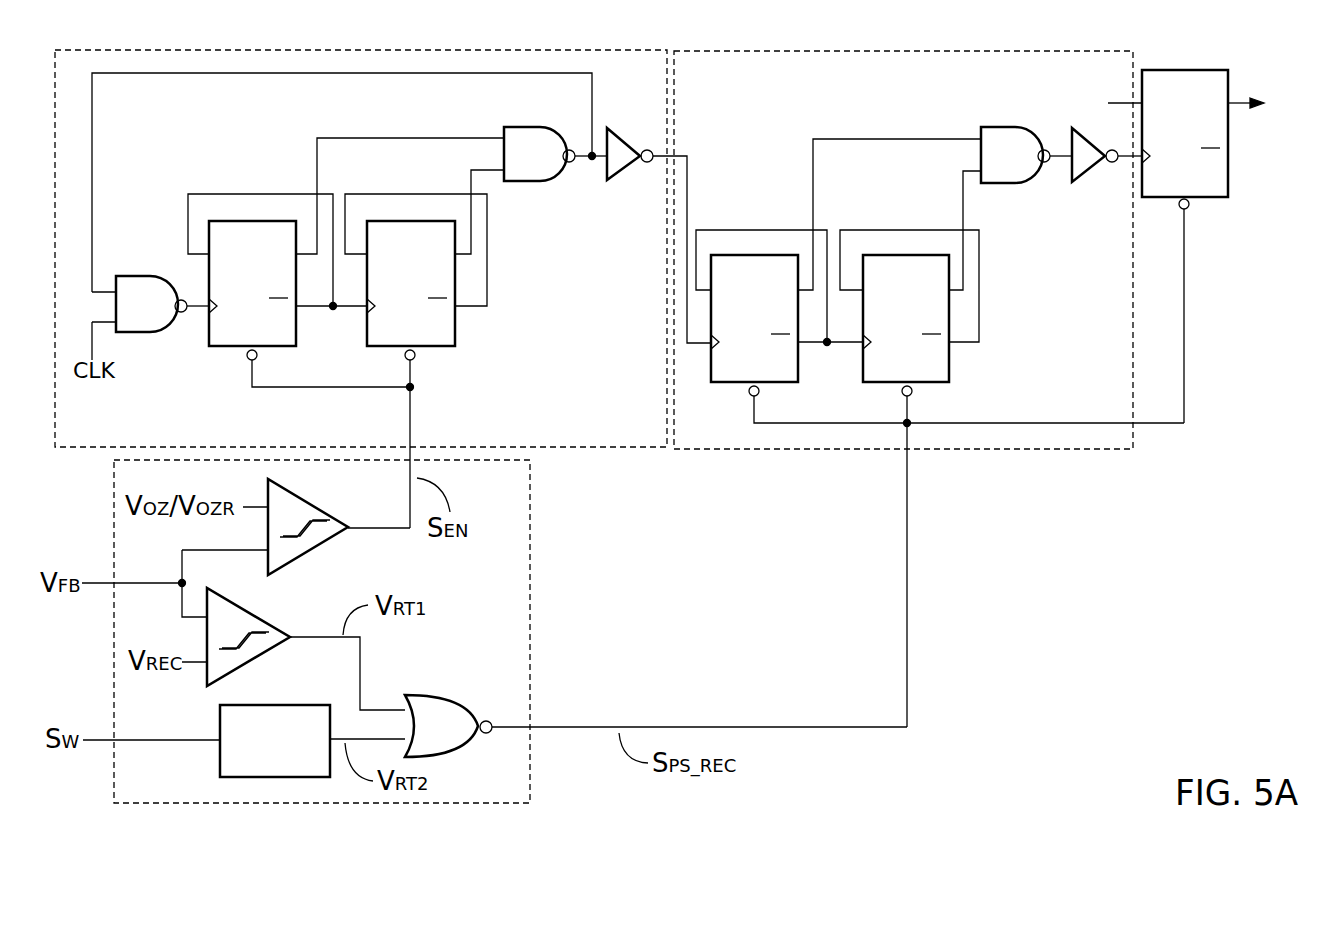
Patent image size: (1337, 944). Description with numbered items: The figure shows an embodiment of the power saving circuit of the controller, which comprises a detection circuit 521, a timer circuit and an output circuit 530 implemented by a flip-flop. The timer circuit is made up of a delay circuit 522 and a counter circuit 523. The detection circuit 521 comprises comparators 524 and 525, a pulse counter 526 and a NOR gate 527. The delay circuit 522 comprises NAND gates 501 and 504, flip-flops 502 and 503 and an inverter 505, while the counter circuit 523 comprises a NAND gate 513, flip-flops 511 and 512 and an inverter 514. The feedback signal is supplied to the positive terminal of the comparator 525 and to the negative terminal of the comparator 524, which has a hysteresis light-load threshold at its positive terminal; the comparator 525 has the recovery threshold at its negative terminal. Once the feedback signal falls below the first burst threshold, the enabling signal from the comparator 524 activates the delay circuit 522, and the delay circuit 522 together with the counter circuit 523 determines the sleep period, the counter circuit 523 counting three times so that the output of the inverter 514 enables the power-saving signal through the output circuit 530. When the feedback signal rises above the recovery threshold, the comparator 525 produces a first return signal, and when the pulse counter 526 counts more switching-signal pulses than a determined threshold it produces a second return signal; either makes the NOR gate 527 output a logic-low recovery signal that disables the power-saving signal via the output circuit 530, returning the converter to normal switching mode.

The NAND gate 501 is at (130, 335).
The flip-flop 502 is at (251, 216).
The flip-flop 503 is at (430, 216).
The NAND gate 504 is at (527, 123).
The inverter 505 is at (627, 182).
The flip-flop 511 is at (788, 250).
The flip-flop 512 is at (920, 250).
The NAND gate 513 is at (1005, 123).
The inverter 514 is at (1092, 182).
The detection circuit 521 is at (530, 493).
The delay circuit 522 is at (383, 50).
The counter circuit 523 is at (913, 50).
The comparator 524 is at (321, 505).
The comparator 525 is at (262, 616).
The pulse counter 526 is at (265, 705).
The NOR gate 527 is at (422, 692).
The output circuit 530 is at (1187, 70).